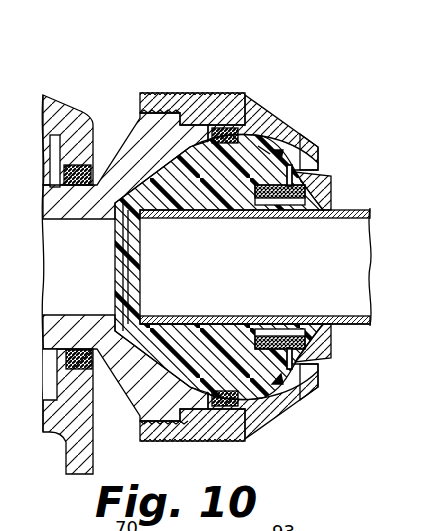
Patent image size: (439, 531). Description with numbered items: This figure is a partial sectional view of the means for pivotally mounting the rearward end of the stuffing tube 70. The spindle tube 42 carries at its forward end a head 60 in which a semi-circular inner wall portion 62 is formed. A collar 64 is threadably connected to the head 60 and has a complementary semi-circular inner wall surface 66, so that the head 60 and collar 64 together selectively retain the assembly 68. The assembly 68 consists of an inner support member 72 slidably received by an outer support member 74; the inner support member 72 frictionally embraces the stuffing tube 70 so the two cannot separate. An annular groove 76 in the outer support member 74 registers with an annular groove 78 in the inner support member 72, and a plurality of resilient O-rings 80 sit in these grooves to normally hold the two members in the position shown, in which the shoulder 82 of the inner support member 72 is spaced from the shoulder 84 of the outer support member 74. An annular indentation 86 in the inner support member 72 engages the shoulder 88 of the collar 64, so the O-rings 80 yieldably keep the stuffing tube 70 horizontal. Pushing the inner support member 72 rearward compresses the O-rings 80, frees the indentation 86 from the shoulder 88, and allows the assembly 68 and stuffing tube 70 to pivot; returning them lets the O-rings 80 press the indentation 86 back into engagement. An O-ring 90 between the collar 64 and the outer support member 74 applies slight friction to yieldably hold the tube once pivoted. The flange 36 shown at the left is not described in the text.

The flange 36 is at (57, 108).
The spindle tube 42 is at (100, 178).
The head 60 is at (160, 127).
The semi-circular inner wall portion 62 is at (178, 110).
The collar 64 is at (237, 140).
The semi-circular inner wall surface 66 is at (270, 160).
The assembly 68 is at (290, 165).
The stuffing tube 70 is at (366, 323).
The inner support member 72 is at (328, 203).
The outer support member 74 is at (266, 124).
The annular groove 76 is at (278, 395).
The annular groove 78 is at (322, 347).
The resilient O-rings 80 is at (300, 190).
The shoulder 82 is at (310, 391).
The shoulder 84 is at (307, 157).
The annular indentation 86 is at (316, 174).
The shoulder 88 is at (320, 373).
The O-ring 90 is at (242, 150).